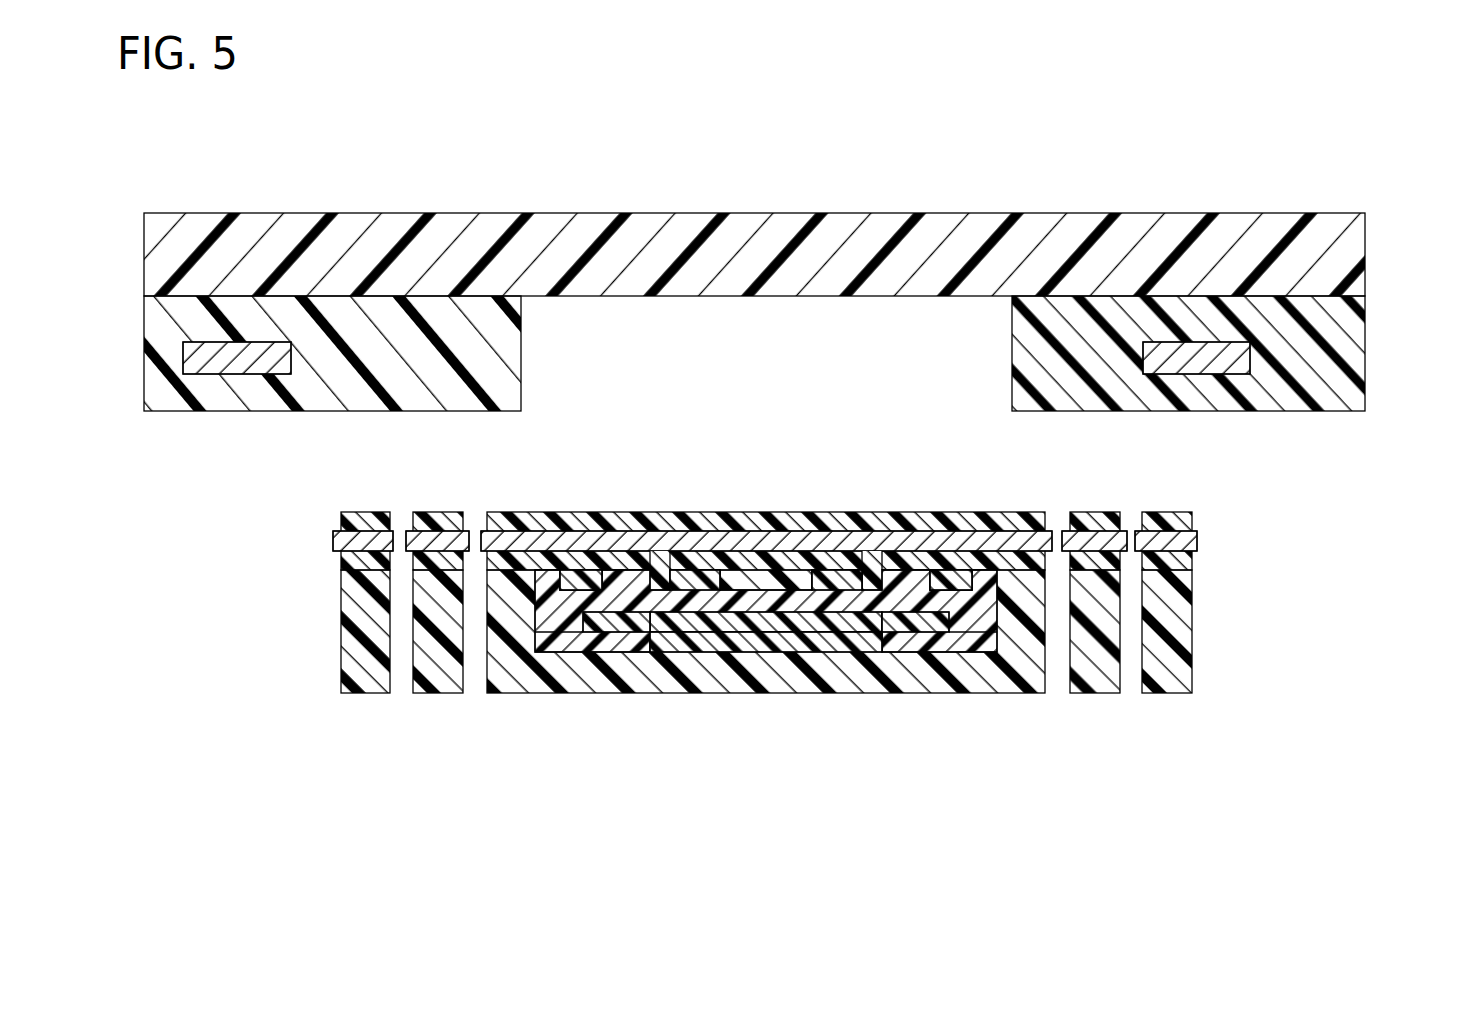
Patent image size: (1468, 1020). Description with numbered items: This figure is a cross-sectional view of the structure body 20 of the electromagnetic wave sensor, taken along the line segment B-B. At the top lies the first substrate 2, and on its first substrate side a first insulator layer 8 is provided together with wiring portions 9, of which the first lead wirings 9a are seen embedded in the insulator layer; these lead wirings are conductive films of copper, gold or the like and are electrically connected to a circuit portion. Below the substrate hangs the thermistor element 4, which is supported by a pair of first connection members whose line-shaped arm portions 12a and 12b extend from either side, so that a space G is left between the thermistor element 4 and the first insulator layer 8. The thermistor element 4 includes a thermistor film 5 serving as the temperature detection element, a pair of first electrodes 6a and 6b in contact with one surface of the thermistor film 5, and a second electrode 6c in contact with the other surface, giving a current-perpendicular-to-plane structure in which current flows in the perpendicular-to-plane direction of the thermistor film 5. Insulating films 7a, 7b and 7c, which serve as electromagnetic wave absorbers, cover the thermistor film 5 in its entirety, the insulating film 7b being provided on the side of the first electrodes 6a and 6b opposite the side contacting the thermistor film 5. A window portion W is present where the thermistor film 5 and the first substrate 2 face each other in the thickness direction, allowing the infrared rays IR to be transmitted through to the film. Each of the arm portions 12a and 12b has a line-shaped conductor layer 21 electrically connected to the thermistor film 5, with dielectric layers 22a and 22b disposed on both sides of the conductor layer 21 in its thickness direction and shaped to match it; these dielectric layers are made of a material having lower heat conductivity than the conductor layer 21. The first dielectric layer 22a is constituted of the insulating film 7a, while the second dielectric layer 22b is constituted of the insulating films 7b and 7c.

The first substrate 2 is at (1345, 266).
The first insulator layer 8 is at (1356, 342).
The wiring portions 9 is at (1232, 357).
The first lead wirings 9a is at (190, 353).
The arm portion 12a is at (1093, 492).
The arm portion 12b is at (444, 494).
The structure body 20 is at (840, 632).
The conductor layer 21 is at (522, 520).
The first dielectric layer 22a is at (1192, 522).
The second dielectric layer 22b is at (844, 674).
The insulating film 7a is at (778, 535).
The insulating film 7b is at (748, 556).
The insulating film 7c is at (898, 682).
The first electrode 6a is at (906, 556).
The first electrode 6b is at (626, 555).
The second electrode 6c is at (732, 652).
The thermistor film 5 is at (778, 624).
The thermistor element 4 is at (690, 662).
The window portion W is at (683, 398).
The infrared rays IR is at (765, 430).
The space G is at (856, 468).